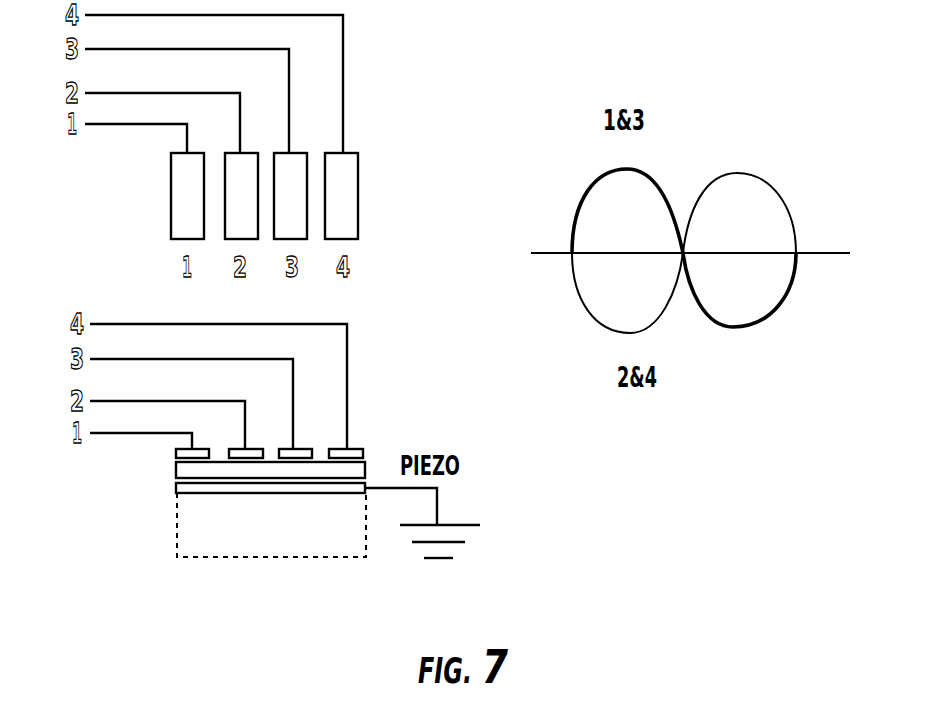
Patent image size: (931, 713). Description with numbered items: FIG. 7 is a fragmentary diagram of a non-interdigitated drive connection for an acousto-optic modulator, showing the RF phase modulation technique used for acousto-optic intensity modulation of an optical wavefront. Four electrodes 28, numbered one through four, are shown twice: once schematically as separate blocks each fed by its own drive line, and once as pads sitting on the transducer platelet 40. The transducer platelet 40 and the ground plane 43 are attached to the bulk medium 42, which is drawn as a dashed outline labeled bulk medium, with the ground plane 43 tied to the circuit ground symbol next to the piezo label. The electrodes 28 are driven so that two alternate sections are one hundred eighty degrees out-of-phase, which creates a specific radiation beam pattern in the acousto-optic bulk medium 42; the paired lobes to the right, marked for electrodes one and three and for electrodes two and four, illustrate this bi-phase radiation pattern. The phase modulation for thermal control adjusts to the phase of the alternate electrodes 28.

The electrodes 28 is at (247, 152).
The transducer platelet 40 is at (176, 470).
The bulk medium 42 is at (197, 557).
The ground plane 43 is at (177, 489).